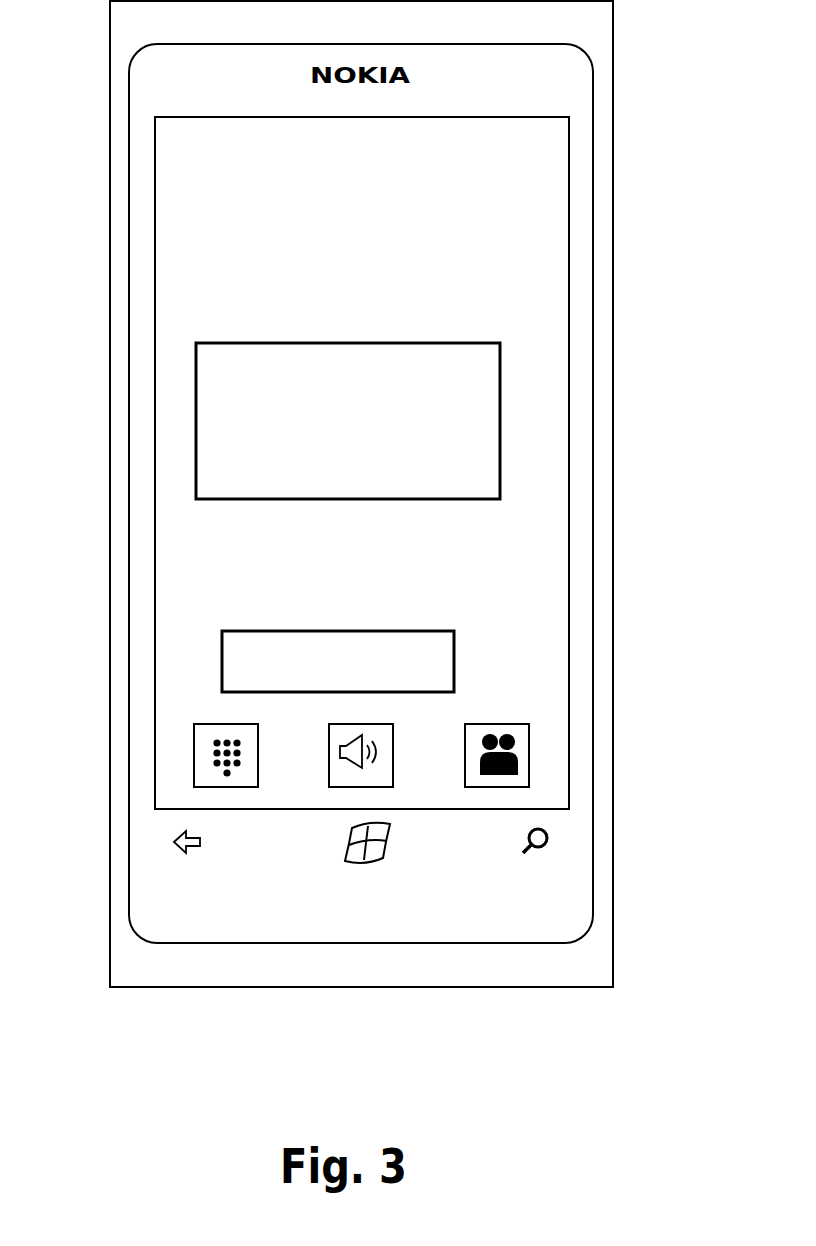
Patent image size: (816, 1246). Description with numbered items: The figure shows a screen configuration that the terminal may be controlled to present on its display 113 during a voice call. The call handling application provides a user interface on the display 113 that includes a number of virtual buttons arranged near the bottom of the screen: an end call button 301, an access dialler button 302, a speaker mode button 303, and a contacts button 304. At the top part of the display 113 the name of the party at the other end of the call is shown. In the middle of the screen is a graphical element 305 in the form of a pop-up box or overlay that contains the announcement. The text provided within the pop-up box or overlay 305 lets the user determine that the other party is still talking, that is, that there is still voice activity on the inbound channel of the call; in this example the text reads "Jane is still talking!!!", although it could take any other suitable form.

The display 113 is at (545, 157).
The end call button 301 is at (222, 648).
The access dialler button 302 is at (205, 747).
The speaker mode button 303 is at (383, 735).
The contacts button 304 is at (519, 745).
The graphical element 305 is at (484, 450).